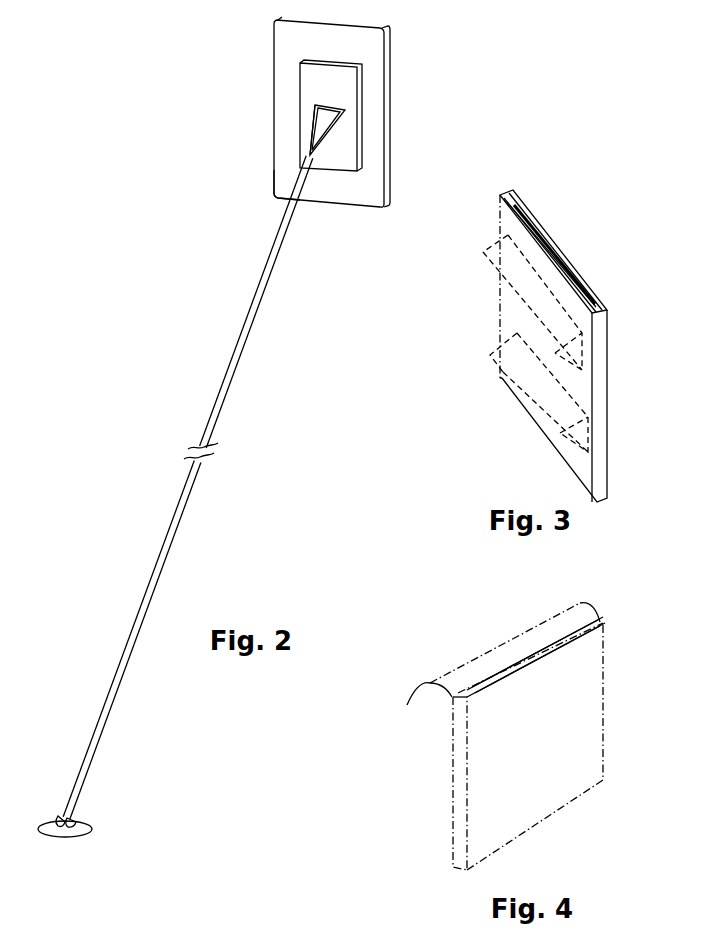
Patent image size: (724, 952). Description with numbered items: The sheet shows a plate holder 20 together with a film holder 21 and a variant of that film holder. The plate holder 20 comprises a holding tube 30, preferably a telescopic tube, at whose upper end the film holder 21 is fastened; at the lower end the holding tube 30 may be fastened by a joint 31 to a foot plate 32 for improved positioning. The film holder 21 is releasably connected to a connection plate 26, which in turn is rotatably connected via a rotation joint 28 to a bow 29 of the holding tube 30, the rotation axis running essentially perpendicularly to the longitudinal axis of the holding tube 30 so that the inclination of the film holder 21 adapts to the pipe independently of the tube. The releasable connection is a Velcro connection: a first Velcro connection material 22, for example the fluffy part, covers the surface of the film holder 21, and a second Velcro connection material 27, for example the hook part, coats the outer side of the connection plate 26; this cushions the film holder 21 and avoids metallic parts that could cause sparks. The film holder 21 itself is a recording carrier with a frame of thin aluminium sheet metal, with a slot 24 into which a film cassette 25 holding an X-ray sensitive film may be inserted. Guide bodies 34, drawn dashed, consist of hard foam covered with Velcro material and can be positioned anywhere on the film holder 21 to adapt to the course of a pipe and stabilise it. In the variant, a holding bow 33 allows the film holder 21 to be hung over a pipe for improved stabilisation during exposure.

In FIG. 2, the plate holder 20 is at (128, 58).
In FIG. 2, the film holder 21 is at (282, 172).
In FIG. 3, the film holder 21 is at (432, 279).
In FIG. 4, the film holder 21 is at (421, 658).
In FIG. 2, the Velcro connection material 22 is at (373, 55).
In FIG. 3, the Velcro connection material 22 is at (500, 310).
In FIG. 4, the Velcro connection material 22 is at (600, 765).
In FIG. 3, the slot 24 is at (540, 228).
In FIG. 4, the slot 24 is at (597, 620).
In FIG. 3, the film cassette 25 is at (553, 245).
In FIG. 2, the connection plate 26 is at (313, 83).
In FIG. 2, the Velcro connection material 27 is at (362, 93).
In FIG. 2, the rotation joint 28 is at (347, 112).
In FIG. 2, the bow 29 is at (313, 128).
In FIG. 2, the holding tube 30 is at (246, 330).
In FIG. 2, the joint 31 is at (58, 820).
In FIG. 2, the foot plate 32 is at (82, 826).
In FIG. 4, the holding bow 33 is at (507, 645).
In FIG. 3, the guide body 34 is at (497, 244).